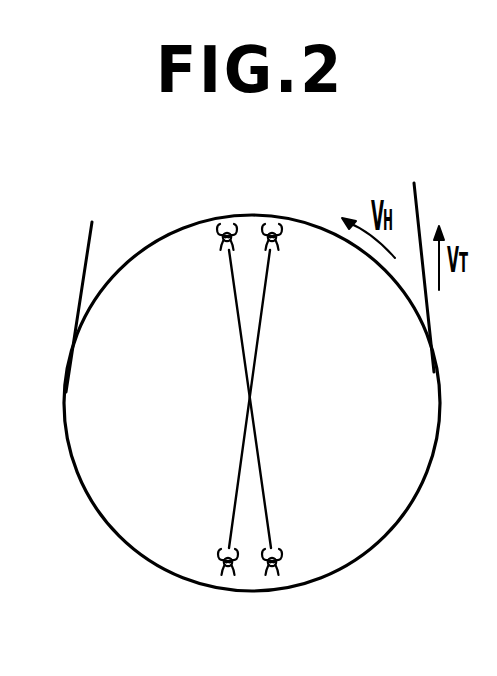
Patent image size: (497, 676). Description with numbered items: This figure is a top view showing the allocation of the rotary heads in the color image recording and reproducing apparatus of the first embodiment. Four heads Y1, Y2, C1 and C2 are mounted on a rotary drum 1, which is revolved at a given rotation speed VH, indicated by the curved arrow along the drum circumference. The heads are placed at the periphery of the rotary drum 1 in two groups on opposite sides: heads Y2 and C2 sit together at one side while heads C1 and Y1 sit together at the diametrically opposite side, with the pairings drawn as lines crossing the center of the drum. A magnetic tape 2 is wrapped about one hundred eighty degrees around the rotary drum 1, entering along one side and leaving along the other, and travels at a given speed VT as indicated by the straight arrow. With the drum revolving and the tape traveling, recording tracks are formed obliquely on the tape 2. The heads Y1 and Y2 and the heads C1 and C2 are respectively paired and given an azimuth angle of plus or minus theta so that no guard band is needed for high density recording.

The rotary drum 1 is at (73, 462).
The magnetic tape 2 is at (419, 205).
The head Y2 is at (208, 226).
The head C2 is at (288, 226).
The head C1 is at (214, 577).
The head Y1 is at (286, 577).